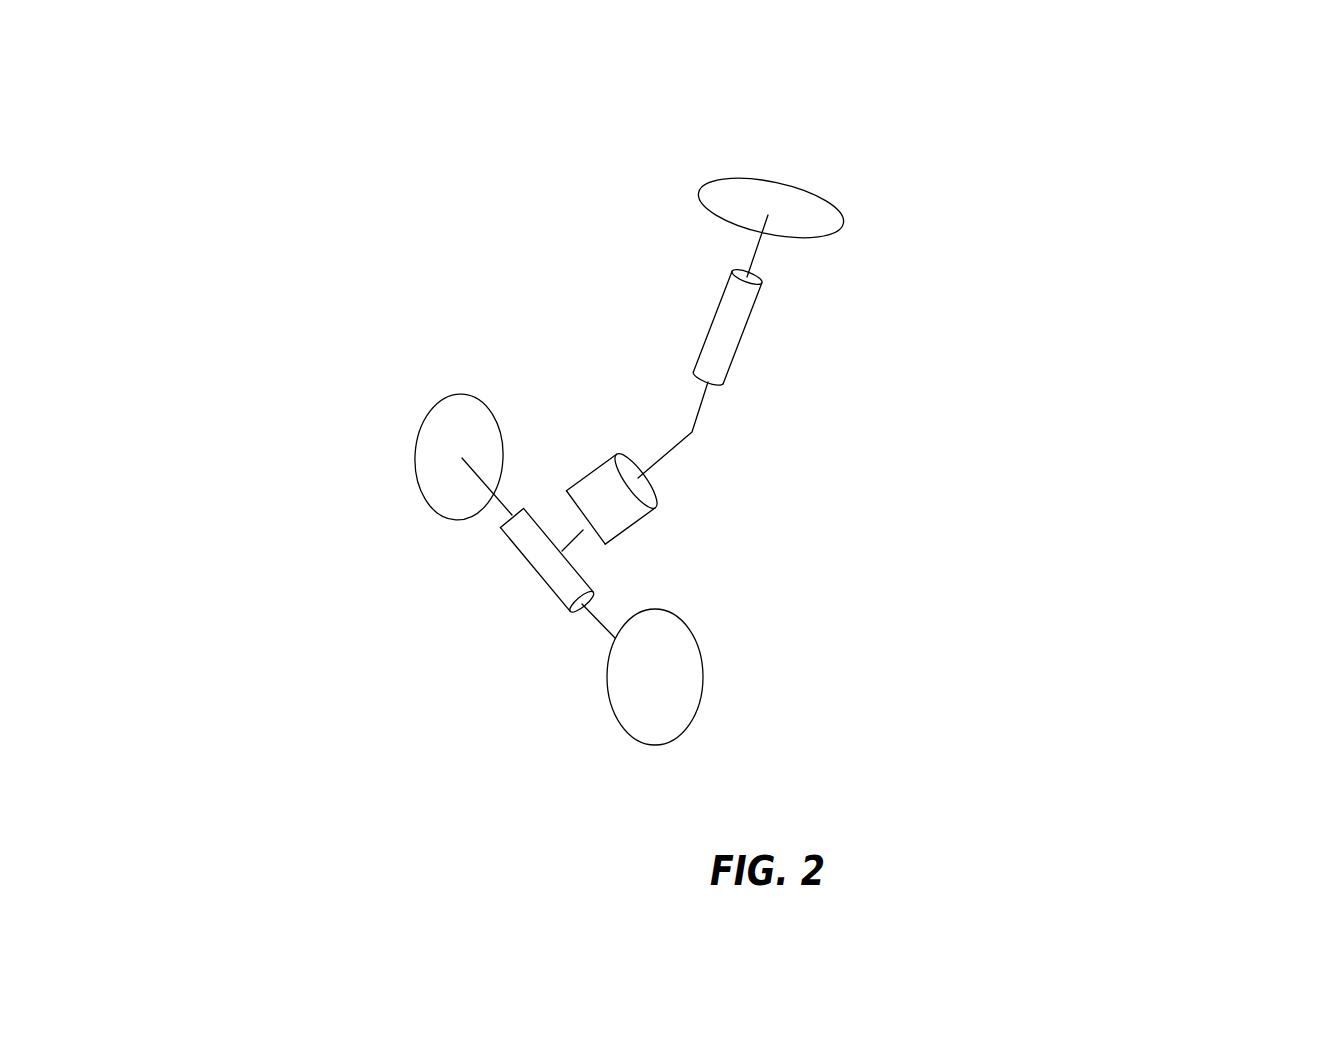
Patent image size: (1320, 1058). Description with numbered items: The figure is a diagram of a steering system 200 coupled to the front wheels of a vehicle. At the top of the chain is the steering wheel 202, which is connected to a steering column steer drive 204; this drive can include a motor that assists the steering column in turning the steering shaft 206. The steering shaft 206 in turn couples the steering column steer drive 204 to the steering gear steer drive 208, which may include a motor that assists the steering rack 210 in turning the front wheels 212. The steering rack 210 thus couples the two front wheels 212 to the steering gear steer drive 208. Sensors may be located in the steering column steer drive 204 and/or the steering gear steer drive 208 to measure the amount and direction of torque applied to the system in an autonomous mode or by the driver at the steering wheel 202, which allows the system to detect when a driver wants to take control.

The steering system 200 is at (327, 129).
The steering wheel 202 is at (859, 215).
The steering column steer drive 204 is at (767, 321).
The steering shaft 206 is at (681, 453).
The steering gear steer drive 208 is at (669, 502).
The steering rack 210 is at (509, 560).
The front wheels 212 is at (411, 420).